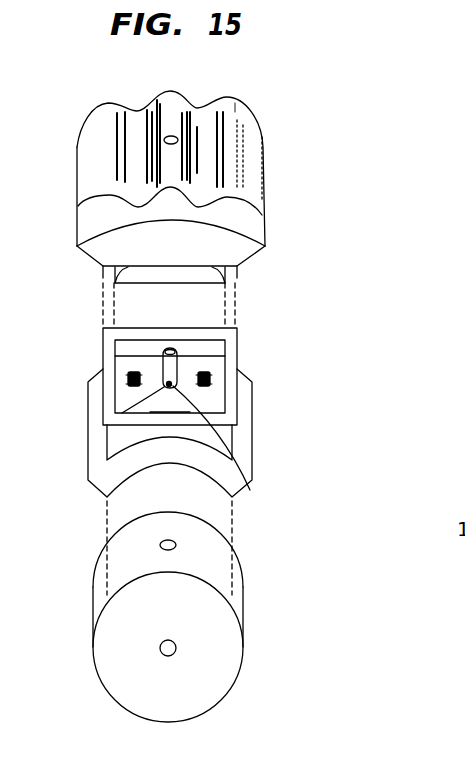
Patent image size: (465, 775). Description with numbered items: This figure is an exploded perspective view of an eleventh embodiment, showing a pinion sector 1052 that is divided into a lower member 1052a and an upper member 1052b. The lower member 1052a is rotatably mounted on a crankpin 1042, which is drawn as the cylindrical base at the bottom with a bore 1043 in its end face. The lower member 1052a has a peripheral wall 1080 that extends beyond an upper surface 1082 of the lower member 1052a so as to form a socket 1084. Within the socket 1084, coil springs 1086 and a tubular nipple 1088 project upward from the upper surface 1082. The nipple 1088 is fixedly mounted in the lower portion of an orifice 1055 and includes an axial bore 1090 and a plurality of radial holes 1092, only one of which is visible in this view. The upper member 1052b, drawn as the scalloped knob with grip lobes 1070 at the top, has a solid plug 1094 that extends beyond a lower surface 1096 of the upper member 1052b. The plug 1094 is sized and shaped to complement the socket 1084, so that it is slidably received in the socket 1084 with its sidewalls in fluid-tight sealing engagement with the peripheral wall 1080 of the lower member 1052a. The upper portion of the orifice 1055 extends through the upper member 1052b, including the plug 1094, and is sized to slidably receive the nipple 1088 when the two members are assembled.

The pinion sector 1052 is at (368, 113).
The lower member 1052a is at (249, 418).
The upper member 1052b is at (258, 213).
The orifice 1055 is at (172, 135).
The gripping lobe 1070 is at (237, 117).
The solid plug 1094 is at (222, 277).
The lower surface 1096 is at (112, 278).
The peripheral wall 1080 is at (232, 353).
The upper surface 1082 is at (133, 362).
The axial bore 1090 is at (167, 350).
The coil springs 1086 is at (128, 377).
The tubular nipple 1088 is at (131, 401).
The radial holes 1092 is at (232, 440).
The socket 1084 is at (170, 402).
The crankpin 1042 is at (226, 572).
The bore 1043 is at (175, 654).